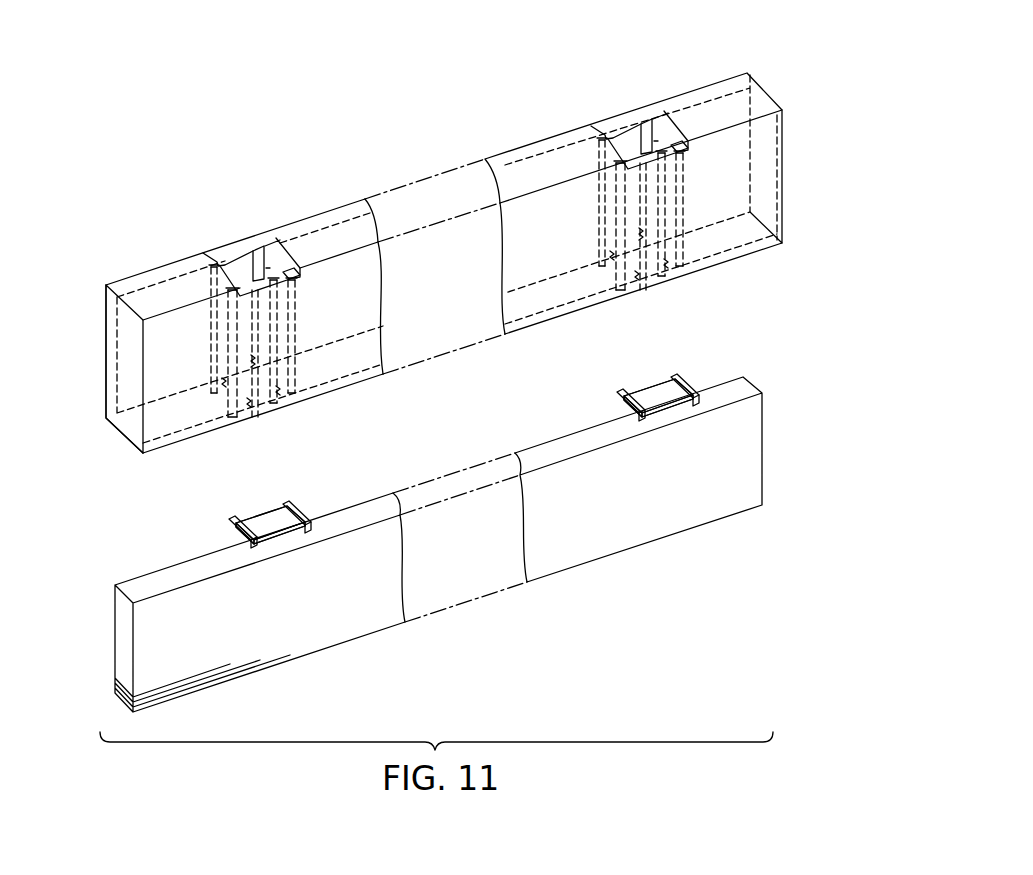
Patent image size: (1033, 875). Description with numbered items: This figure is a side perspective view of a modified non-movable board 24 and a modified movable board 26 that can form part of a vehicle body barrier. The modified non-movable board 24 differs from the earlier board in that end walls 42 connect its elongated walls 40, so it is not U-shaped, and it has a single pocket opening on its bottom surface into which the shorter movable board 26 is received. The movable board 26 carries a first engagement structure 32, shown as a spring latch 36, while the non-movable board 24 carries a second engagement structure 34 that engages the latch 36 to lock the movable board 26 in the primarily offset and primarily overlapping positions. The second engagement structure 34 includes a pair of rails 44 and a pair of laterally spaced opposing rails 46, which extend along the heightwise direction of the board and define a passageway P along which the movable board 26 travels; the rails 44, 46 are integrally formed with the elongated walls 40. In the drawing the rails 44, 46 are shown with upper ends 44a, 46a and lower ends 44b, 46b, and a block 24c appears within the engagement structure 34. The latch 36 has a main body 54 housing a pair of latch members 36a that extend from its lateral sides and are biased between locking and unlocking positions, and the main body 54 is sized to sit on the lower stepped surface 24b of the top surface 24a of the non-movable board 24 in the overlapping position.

The modified non-movable board 24 is at (803, 130).
The top surface 24a is at (340, 230).
The lower stepped surface 24b is at (283, 284).
The block 24c is at (249, 265).
The modified movable board 26 is at (780, 433).
The first engagement structure 32 is at (248, 504).
The second engagement structure 34 is at (224, 226).
The spring latch 36 is at (292, 559).
The latch members 36a is at (231, 522).
The elongated walls 40 is at (351, 380).
The end walls 42 is at (132, 377).
The rails 44 is at (213, 352).
The top of first pin 44a is at (245, 288).
The barb of first pin 44b is at (260, 410).
The opposing rails 46 is at (297, 333).
The top of second pin 46a is at (282, 278).
The barb of second pin 46b is at (290, 398).
The main body 54 is at (271, 521).
The passageway P is at (268, 270).